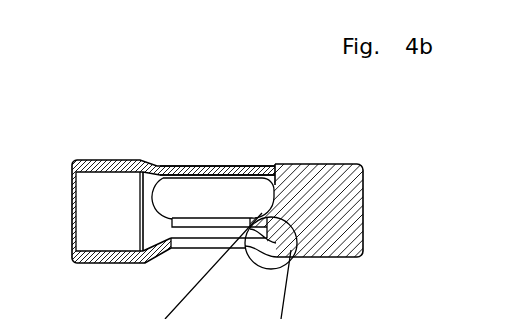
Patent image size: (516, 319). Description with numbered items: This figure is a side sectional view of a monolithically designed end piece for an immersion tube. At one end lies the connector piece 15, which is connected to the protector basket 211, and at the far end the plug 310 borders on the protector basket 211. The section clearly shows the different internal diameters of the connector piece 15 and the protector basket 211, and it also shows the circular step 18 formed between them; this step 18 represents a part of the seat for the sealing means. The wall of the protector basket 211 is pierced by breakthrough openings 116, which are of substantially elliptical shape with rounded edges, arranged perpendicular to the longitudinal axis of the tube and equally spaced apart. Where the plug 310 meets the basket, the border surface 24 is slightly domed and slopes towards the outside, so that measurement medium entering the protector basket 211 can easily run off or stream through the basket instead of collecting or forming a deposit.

The connector piece 15 is at (99, 160).
The circular step 18 is at (133, 174).
The protector basket 211 is at (185, 166).
The border surface 24 is at (262, 195).
The breakthrough openings 116 is at (192, 202).
The plug 310 is at (337, 195).